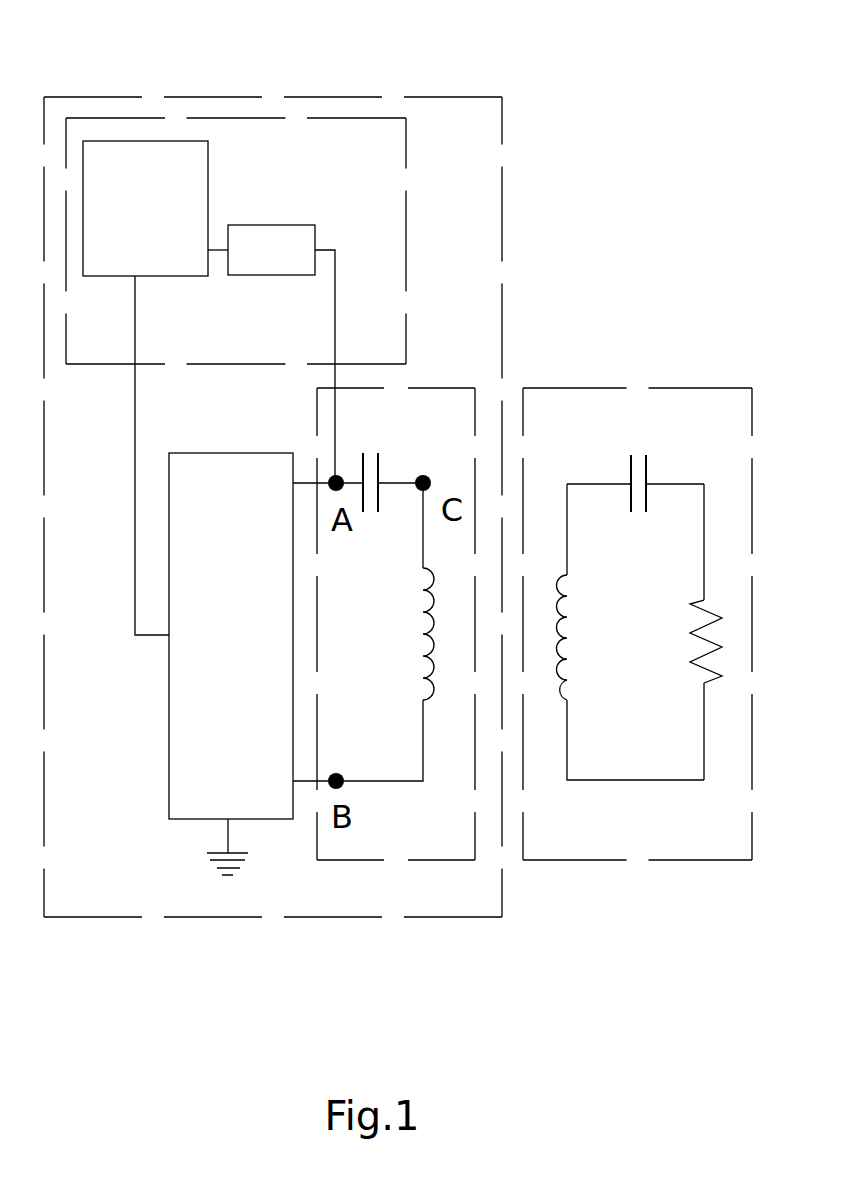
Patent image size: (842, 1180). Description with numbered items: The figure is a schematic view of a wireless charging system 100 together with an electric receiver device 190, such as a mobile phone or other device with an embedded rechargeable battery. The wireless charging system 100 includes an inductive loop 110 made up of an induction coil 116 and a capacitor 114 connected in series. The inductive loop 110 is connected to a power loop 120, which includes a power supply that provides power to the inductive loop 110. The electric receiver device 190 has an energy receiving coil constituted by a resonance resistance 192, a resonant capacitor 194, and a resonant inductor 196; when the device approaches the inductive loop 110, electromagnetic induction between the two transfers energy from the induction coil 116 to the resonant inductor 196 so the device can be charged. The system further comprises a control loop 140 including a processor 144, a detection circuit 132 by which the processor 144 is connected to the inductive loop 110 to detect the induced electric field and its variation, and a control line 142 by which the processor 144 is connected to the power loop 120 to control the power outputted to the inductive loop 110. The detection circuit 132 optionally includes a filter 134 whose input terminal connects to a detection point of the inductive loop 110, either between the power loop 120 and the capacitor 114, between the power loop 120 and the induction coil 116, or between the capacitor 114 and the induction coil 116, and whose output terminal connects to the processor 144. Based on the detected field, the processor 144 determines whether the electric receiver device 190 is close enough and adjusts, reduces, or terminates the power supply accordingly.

The wireless charging system 100 is at (295, 97).
The inductive loop 110 is at (450, 395).
The capacitor 114 is at (378, 482).
The induction coil 116 is at (427, 637).
The power loop 120 is at (252, 664).
The detection circuit 132 is at (335, 290).
The filter 134 is at (271, 250).
The control loop 140 is at (120, 118).
The control line 142 is at (137, 362).
The processor 144 is at (155, 208).
The electric receiver device 190 is at (585, 395).
The resonance resistance 192 is at (693, 662).
The resonant capacitor 194 is at (628, 482).
The resonant inductor 196 is at (570, 620).